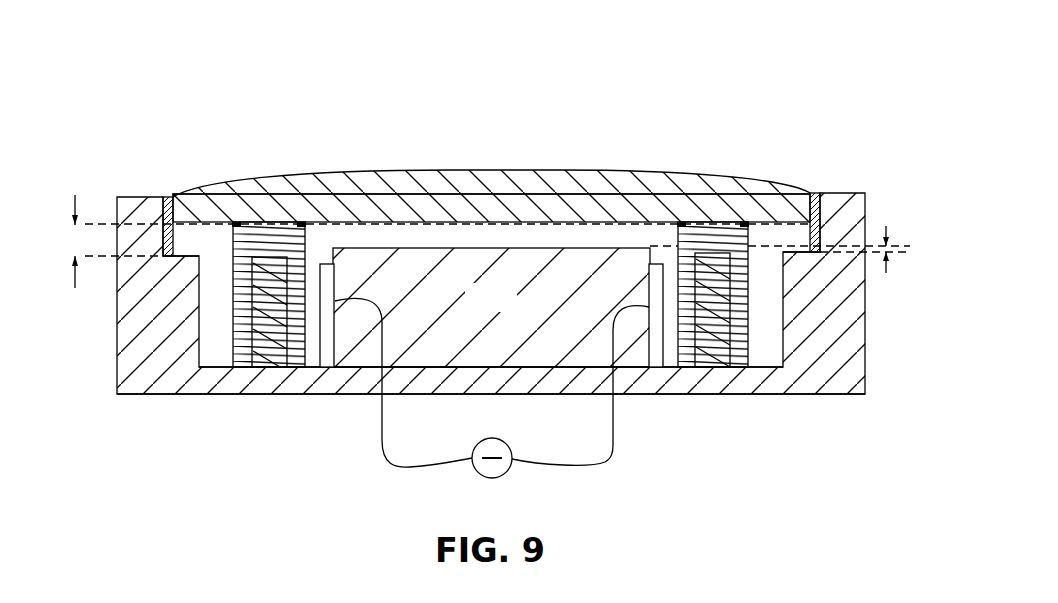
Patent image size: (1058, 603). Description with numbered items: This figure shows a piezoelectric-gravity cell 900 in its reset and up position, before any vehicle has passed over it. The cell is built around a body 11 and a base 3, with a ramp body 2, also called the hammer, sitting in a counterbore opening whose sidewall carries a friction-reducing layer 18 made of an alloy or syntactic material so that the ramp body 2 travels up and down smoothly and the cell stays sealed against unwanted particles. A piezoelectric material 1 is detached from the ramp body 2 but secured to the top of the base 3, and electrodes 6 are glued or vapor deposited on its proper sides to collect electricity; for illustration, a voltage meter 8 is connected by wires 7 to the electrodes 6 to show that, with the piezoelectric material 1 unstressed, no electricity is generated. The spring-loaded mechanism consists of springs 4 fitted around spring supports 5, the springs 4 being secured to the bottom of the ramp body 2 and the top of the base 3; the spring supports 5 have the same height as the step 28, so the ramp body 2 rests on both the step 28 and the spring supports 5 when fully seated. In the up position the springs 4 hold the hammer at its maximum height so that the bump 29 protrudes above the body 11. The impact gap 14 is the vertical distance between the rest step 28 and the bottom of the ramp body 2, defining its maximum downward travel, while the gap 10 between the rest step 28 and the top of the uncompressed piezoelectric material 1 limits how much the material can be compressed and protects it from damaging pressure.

The piezoelectric material (PZT) 1 is at (428, 260).
The ramp body 2 is at (510, 202).
The bump 29 is at (584, 178).
The base 3 is at (762, 385).
The spring 4 is at (305, 226).
The spring support 5 is at (273, 257).
The electrode 6 is at (327, 367).
The wire 7 is at (381, 455).
The voltage meter 8 is at (510, 466).
The gap 10 is at (886, 273).
The body 11 is at (117, 327).
The impact gap 14 is at (75, 195).
The friction-reducing layer 18 is at (170, 197).
The step 28 is at (192, 257).
The piezoelectric-gravity (PZG) cell 900 is at (836, 68).